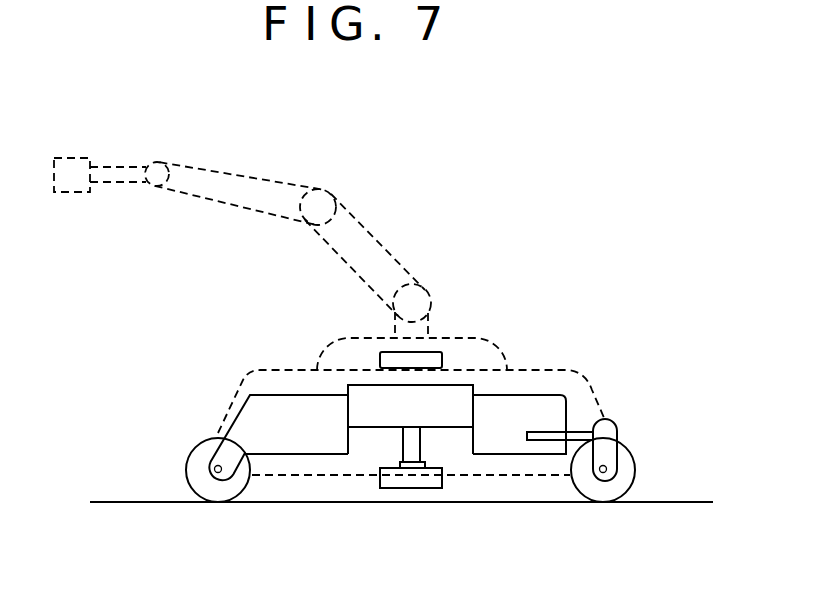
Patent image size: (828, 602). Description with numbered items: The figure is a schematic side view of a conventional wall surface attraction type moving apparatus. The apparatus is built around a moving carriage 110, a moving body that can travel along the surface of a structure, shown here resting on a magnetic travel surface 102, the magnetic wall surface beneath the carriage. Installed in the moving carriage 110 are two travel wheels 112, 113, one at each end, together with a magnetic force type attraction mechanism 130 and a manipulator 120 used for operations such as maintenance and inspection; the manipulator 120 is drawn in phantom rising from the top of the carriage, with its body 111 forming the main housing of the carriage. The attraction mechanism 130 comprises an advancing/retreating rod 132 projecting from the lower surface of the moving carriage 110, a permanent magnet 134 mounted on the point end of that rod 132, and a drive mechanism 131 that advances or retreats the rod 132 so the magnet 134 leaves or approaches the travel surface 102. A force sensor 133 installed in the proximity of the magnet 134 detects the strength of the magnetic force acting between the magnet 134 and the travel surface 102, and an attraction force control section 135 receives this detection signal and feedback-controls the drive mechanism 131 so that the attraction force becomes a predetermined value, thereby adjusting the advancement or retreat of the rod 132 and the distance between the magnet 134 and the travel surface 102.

The magnetic travel surface 102 is at (693, 502).
The moving carriage 110 is at (565, 362).
The robot body 111 is at (557, 412).
The travel wheel 112 is at (217, 490).
The travel wheel 113 is at (627, 460).
The manipulator 120 is at (272, 180).
The magnetic force type attraction mechanism 130 is at (486, 387).
The drive mechanism 131 is at (365, 393).
The advancing/retreating rod 132 is at (413, 447).
The force sensor 133 is at (417, 465).
The permanent magnet 134 is at (395, 477).
The attraction force control section 135 is at (433, 357).